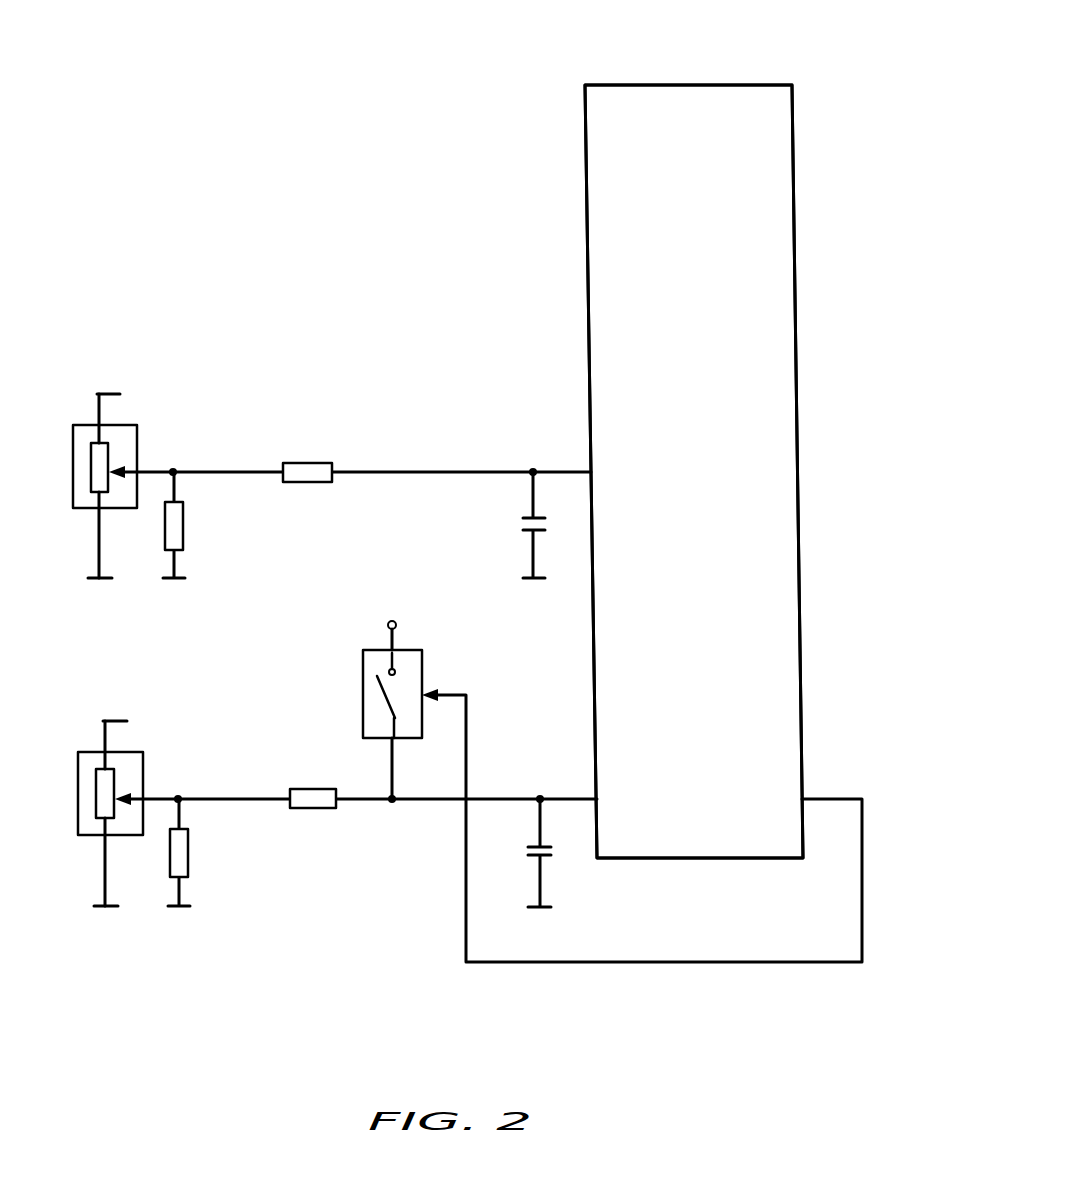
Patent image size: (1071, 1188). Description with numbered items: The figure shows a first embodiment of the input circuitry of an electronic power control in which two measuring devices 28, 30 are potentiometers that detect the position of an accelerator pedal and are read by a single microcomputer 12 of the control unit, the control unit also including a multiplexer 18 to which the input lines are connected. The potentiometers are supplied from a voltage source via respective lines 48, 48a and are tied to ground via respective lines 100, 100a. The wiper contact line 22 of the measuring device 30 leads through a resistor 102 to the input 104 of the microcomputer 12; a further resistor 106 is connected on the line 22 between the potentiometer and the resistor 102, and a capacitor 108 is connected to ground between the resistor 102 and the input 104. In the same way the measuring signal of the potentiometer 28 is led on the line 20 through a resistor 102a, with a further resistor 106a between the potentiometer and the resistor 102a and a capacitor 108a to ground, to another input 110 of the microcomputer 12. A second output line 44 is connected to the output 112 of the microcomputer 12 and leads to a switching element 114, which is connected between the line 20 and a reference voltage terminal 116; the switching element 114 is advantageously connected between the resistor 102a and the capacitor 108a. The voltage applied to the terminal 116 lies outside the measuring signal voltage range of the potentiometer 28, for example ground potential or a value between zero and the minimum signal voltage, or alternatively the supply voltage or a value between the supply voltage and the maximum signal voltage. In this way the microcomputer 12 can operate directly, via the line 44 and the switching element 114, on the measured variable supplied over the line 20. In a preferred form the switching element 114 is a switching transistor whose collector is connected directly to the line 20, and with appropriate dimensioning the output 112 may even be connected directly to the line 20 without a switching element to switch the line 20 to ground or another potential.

The microcomputer 12 is at (727, 85).
The multiplexer 18 is at (694, 471).
The input line 20 is at (502, 798).
The wiper contact line 22 is at (432, 470).
The measuring device 28 is at (133, 754).
The measuring device 30 is at (128, 427).
The output line 44 is at (862, 900).
The supply line 48 is at (112, 393).
The supply line 48a is at (117, 720).
The ground line 100 is at (99, 545).
The ground line 100a is at (105, 870).
The resistor 102 is at (306, 466).
The resistor 102a is at (312, 792).
The input of the microcomputer 104 is at (589, 470).
The further resistor 106 is at (183, 528).
The further resistor 106a is at (188, 852).
The capacitor 108 is at (527, 531).
The capacitor 108a is at (548, 858).
The input of the microcomputer 110 is at (595, 798).
The output of the microcomputer 112 is at (803, 797).
The switching element 114 is at (414, 652).
The reference voltage source terminal 116 is at (392, 621).